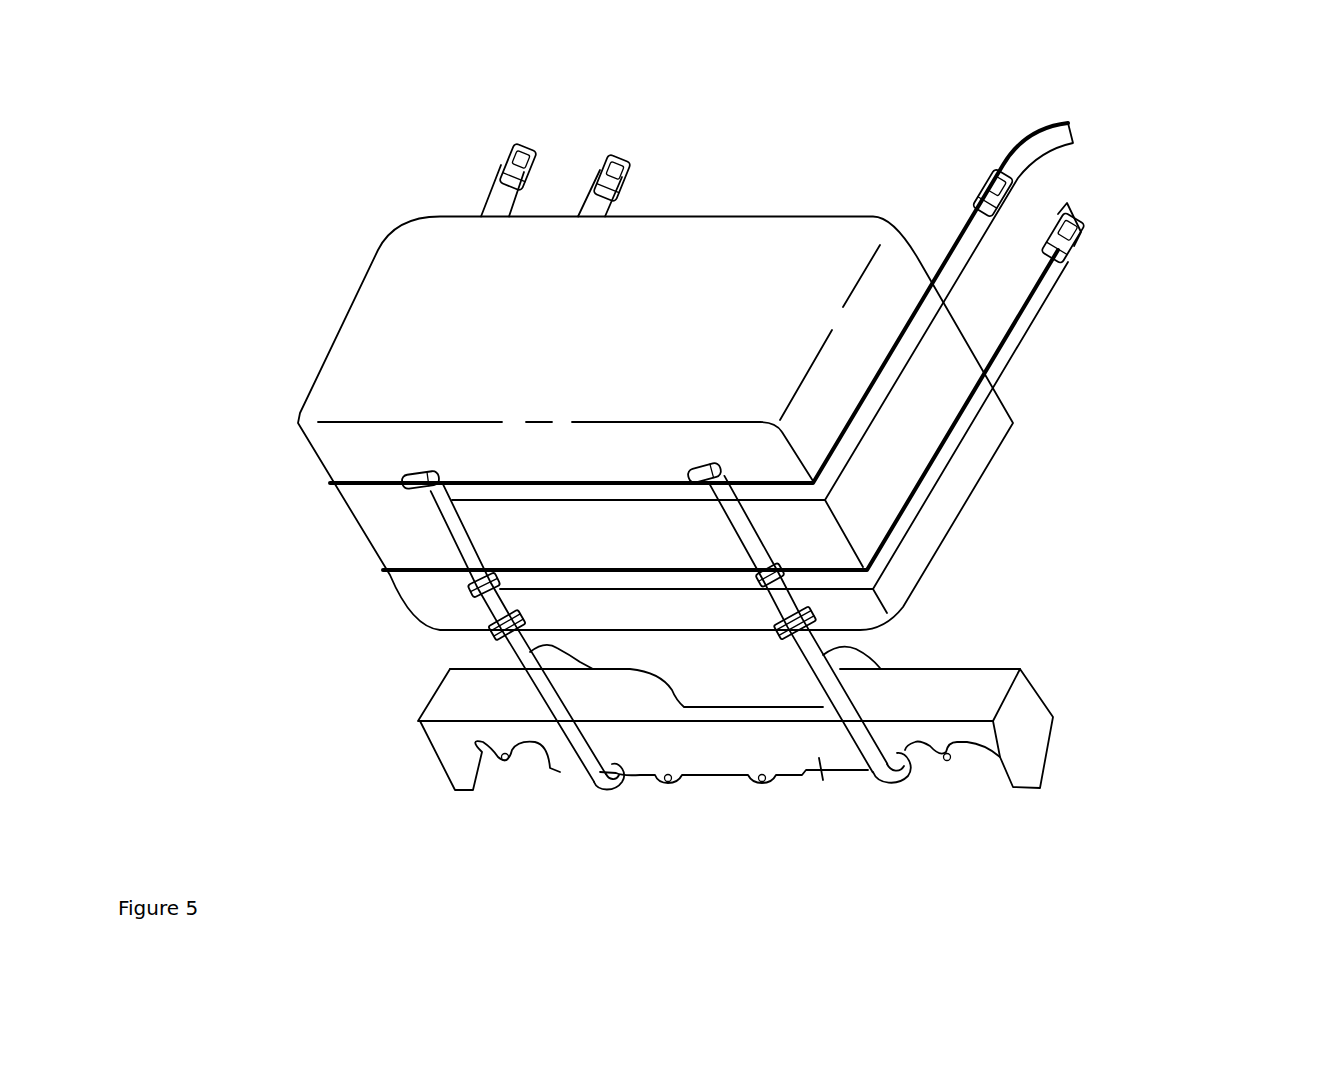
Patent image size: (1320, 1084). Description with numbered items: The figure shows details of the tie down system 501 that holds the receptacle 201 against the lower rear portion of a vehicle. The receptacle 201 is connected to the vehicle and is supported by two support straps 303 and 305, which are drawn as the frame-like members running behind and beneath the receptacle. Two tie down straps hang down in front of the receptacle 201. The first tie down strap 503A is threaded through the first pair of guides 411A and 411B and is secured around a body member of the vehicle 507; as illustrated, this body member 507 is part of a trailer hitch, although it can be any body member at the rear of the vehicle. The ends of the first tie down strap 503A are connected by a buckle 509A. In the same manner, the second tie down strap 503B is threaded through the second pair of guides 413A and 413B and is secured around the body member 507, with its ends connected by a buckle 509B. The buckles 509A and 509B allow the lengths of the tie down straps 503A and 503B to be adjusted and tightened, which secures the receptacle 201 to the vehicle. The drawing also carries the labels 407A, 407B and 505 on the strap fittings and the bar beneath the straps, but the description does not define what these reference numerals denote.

The receptacle 201 is at (442, 293).
The support strap 303 is at (927, 484).
The support strap 305 is at (848, 452).
The strap clip 407A is at (780, 557).
The strap hook 407B is at (712, 460).
The guide 411A is at (795, 608).
The guide 411B is at (737, 482).
The guide 413A is at (440, 486).
The guide 413B is at (467, 580).
The tie down system 501 is at (1120, 418).
The first tie down strap 503A is at (917, 781).
The second tie down strap 503B is at (597, 786).
The mounting bar 505 is at (465, 697).
The body member of the vehicle 507 is at (560, 767).
The buckle 509A is at (815, 622).
The buckle 509B is at (480, 627).